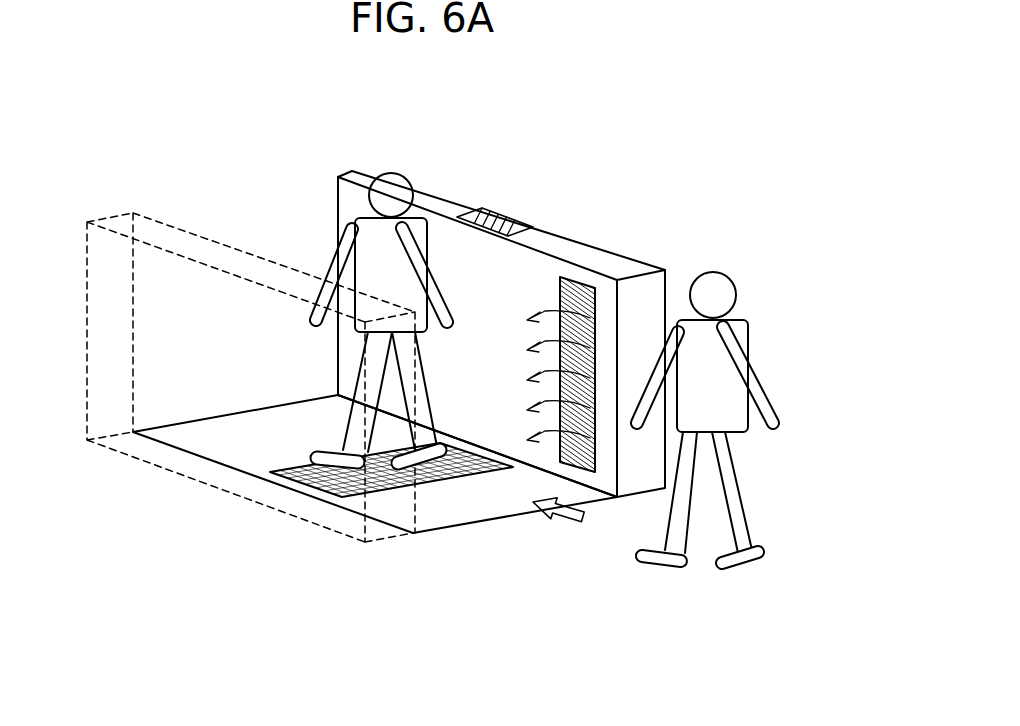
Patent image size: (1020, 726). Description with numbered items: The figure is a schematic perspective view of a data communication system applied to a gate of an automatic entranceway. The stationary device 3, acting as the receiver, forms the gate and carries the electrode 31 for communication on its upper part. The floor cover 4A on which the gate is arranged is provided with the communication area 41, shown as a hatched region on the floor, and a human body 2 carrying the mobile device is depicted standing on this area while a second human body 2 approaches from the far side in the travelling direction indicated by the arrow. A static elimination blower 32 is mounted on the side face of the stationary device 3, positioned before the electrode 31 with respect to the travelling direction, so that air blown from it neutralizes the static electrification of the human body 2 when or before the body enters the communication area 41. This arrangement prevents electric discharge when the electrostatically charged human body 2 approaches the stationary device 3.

The human body 2 is at (395, 172).
The stationary device 3 is at (580, 278).
The electrode 31 is at (490, 207).
The static elimination blower 32 is at (593, 257).
The communication area 41 is at (325, 483).
The floor cover 4A is at (455, 532).